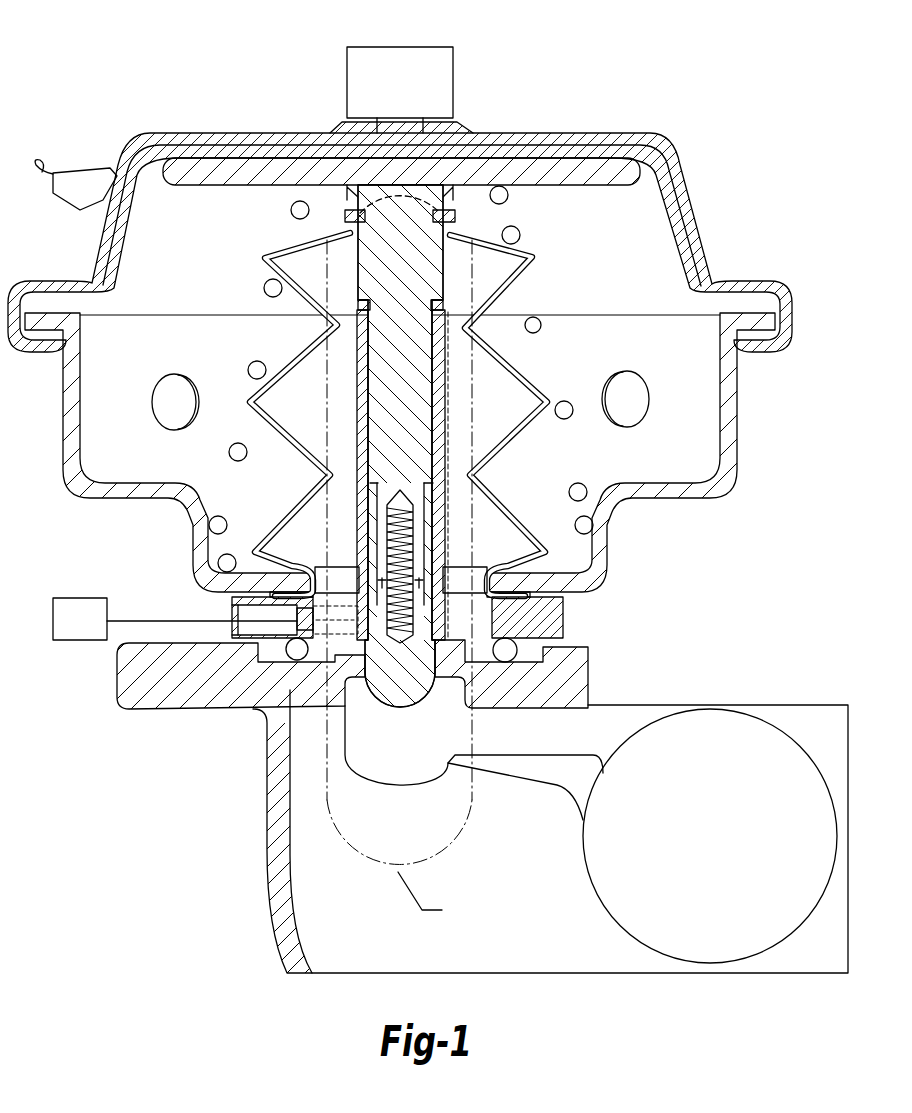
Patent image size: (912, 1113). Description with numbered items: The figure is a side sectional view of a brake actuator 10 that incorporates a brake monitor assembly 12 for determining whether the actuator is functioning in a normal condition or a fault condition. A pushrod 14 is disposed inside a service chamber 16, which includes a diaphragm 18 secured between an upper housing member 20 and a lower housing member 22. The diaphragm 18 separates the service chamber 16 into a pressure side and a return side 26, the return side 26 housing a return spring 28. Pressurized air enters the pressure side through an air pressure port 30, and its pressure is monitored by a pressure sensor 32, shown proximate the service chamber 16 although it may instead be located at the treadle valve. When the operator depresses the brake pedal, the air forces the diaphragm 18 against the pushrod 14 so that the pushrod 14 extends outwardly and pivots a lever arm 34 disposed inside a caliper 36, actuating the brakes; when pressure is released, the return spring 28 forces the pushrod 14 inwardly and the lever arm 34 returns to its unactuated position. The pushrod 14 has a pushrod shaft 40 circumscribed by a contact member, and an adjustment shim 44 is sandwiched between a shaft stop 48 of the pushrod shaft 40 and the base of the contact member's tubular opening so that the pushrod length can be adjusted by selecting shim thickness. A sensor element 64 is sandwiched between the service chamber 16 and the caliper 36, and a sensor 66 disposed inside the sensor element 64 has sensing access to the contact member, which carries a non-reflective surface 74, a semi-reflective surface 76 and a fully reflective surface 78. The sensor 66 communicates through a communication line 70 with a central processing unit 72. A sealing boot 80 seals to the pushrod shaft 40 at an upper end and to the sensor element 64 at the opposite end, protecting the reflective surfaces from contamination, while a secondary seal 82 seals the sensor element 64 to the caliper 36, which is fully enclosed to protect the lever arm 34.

The brake actuator 10 is at (582, 38).
The brake monitor assembly 12 is at (190, 600).
The pushrod 14 is at (348, 392).
The service chamber 16 is at (748, 383).
The diaphragm 18 is at (100, 272).
The upper housing member 20 is at (683, 160).
The lower housing member 22 is at (712, 490).
The return side 26 is at (636, 228).
The return spring 28 is at (541, 331).
The air pressure port 30 is at (40, 160).
The pressure sensor 32 is at (93, 170).
The lever arm 34 is at (408, 759).
The caliper 36 is at (277, 868).
The pushrod shaft 40 is at (432, 278).
The adjustment shim 44 is at (435, 307).
The shaft stop 48 is at (360, 310).
The sensor element 64 is at (557, 610).
The sensor 66 is at (307, 630).
The communication line 70 is at (118, 618).
The central processing unit 72 is at (80, 597).
The non-reflective surface 74 is at (440, 607).
The semi-reflective surface 76 is at (470, 480).
The fully reflective surface 78 is at (474, 356).
The sealing boot 80 is at (523, 437).
The secondary seal 82 is at (505, 663).